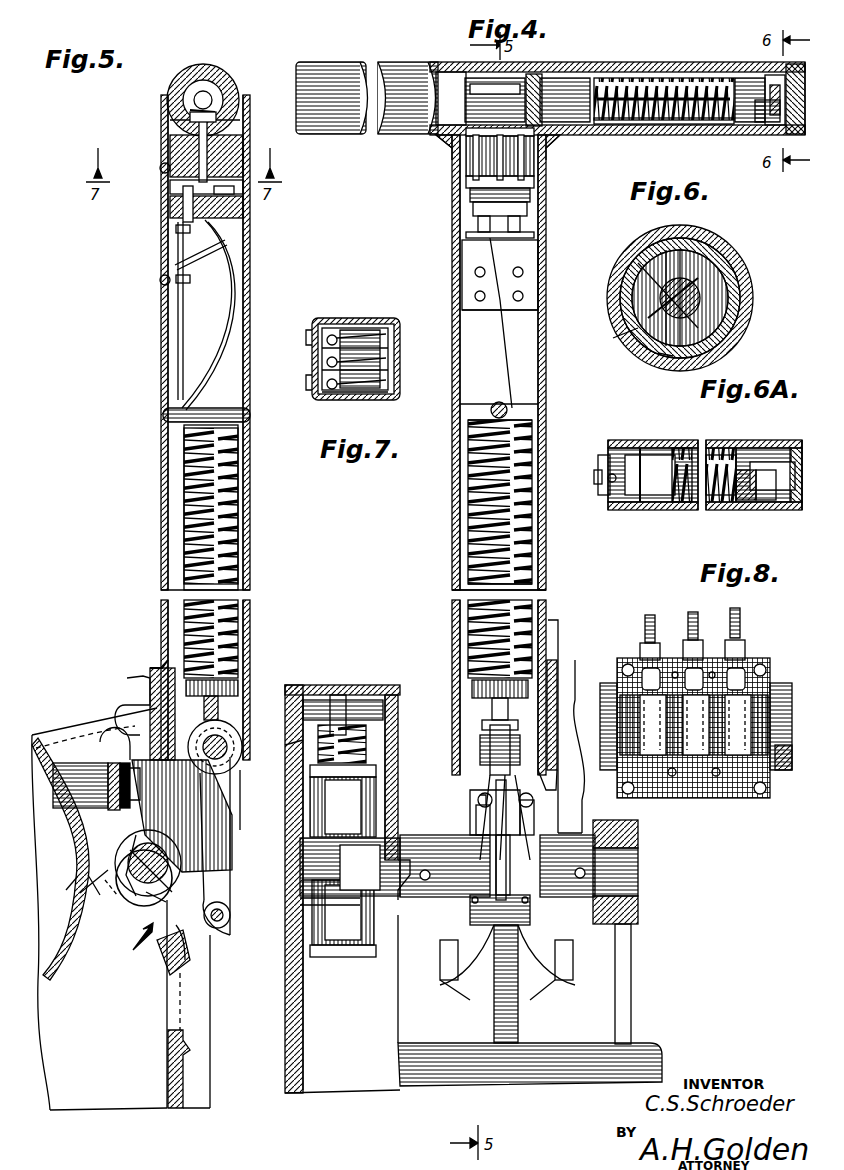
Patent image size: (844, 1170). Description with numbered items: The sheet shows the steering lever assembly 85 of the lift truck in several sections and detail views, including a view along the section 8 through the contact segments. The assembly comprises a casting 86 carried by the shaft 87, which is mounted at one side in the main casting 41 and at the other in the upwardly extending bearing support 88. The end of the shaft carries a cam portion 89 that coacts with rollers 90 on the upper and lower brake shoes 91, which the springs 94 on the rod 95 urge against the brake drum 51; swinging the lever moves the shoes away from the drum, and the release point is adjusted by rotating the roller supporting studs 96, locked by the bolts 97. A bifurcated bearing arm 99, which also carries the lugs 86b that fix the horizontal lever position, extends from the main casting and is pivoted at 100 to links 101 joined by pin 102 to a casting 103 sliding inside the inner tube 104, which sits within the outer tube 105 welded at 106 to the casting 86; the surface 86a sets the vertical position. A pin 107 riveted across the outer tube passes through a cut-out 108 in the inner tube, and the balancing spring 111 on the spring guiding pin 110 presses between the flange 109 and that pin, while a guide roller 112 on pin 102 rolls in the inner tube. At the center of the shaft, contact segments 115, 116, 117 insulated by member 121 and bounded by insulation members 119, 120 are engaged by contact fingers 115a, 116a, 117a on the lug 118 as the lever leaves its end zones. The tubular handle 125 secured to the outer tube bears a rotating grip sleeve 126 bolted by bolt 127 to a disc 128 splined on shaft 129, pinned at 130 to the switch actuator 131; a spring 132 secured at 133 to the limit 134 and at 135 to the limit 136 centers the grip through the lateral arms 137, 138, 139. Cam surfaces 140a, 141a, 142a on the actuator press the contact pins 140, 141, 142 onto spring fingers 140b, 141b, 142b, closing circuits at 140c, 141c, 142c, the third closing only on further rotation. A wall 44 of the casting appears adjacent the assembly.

In FIG. 5, the section line 8 is at (104, 917).
In FIG. 5, the main casting 41 is at (93, 1095).
In FIG. 4, the main casting 41 is at (392, 1092).
In FIG. 4, the wall 44 is at (560, 700).
In FIG. 4, the brake drum 51 is at (300, 900).
In FIG. 5, the steering lever assembly 85 is at (160, 570).
In FIG. 5, the casting 86 is at (150, 680).
In FIG. 4, the casting 86 is at (568, 660).
In FIG. 5, the surface 86a is at (125, 678).
In FIG. 5, the lugs 86b is at (166, 957).
In FIG. 4, the lugs 86b is at (480, 970).
In FIG. 5, the shaft 87 is at (178, 850).
In FIG. 4, the shaft 87 is at (395, 838).
In FIG. 8, the shaft 87 is at (790, 715).
In FIG. 4, the bearing support 88 is at (638, 832).
In FIG. 4, the cam portion 89 is at (300, 876).
In FIG. 4, the rollers 90 is at (290, 840).
In FIG. 4, the brake shoes 91 is at (312, 710).
In FIG. 4, the springs 94 is at (345, 730).
In FIG. 4, the rod 95 is at (338, 700).
In FIG. 4, the roller supporting studs 96 is at (372, 765).
In FIG. 4, the bolts 97 is at (376, 800).
In FIG. 5, the bifurcated bearing arm 99 is at (200, 1015).
In FIG. 4, the bifurcated bearing arm 99 is at (520, 1016).
In FIG. 5, the pivot 100 is at (222, 930).
In FIG. 4, the pivot 100 is at (475, 960).
In FIG. 5, the links 101 is at (236, 880).
In FIG. 4, the links 101 is at (520, 920).
In FIG. 5, the pin 102 is at (222, 760).
In FIG. 4, the pin 102 is at (480, 750).
In FIG. 5, the casting 103 is at (220, 705).
In FIG. 4, the casting 103 is at (495, 710).
In FIG. 5, the inner tube 104 is at (250, 563).
In FIG. 4, the inner tube 104 is at (452, 595).
In FIG. 5, the outer tube 105 is at (246, 544).
In FIG. 4, the outer tube 105 is at (452, 528).
In FIG. 7, the outer tube 105 is at (385, 322).
In FIG. 5, the weld 106 is at (168, 660).
In FIG. 4, the weld 106 is at (562, 632).
In FIG. 5, the pin 107 is at (170, 410).
In FIG. 4, the pin 107 is at (505, 406).
In FIG. 4, the cut-out 108 is at (508, 410).
In FIG. 5, the flange 109 is at (236, 670).
In FIG. 4, the flange 109 is at (476, 680).
In FIG. 5, the spring guiding pin 110 is at (240, 625).
In FIG. 4, the spring guiding pin 110 is at (490, 594).
In FIG. 5, the spring 111 is at (240, 520).
In FIG. 4, the spring 111 is at (470, 480).
In FIG. 5, the guide roller 112 is at (225, 738).
In FIG. 4, the guide roller 112 is at (485, 725).
In FIG. 5, the contact segment 115 is at (158, 905).
In FIG. 8, the contact segment 115 is at (650, 755).
In FIG. 4, the contact finger 115a is at (519, 865).
In FIG. 8, the contact finger 115a is at (645, 655).
In FIG. 8, the contact segment 116 is at (720, 770).
In FIG. 4, the contact finger 116a is at (540, 810).
In FIG. 8, the contact finger 116a is at (688, 655).
In FIG. 5, the contact segment 117 is at (145, 902).
In FIG. 8, the contact segment 117 is at (745, 750).
In FIG. 5, the contact finger 117a is at (100, 876).
In FIG. 4, the contact finger 117a is at (476, 830).
In FIG. 8, the contact finger 117a is at (738, 655).
In FIG. 5, the lug 118 is at (78, 775).
In FIG. 4, the lug 118 is at (470, 800).
In FIG. 5, the insulation member 119 is at (135, 830).
In FIG. 8, the insulation member 119 is at (706, 660).
In FIG. 5, the insulation member 120 is at (152, 905).
In FIG. 4, the insulation member 120 is at (470, 910).
In FIG. 8, the insulation member 120 is at (706, 800).
In FIG. 5, the insulation member 121 is at (128, 892).
In FIG. 8, the insulation member 121 is at (770, 710).
In FIG. 5, the tubular handle 125 is at (215, 70).
In FIG. 4, the tubular handle 125 is at (430, 66).
In FIG. 6A, the tubular handle 125 is at (612, 440).
In FIG. 4, the grip sleeve 126 is at (636, 62).
In FIG. 6, the grip sleeve 126 is at (754, 300).
In FIG. 6A, the grip sleeve 126 is at (688, 442).
In FIG. 4, the bolt 127 is at (765, 135).
In FIG. 6A, the bolt 127 is at (780, 465).
In FIG. 4, the disc 128 is at (806, 128).
In FIG. 6A, the disc 128 is at (790, 505).
In FIG. 5, the shaft 129 is at (201, 90).
In FIG. 4, the shaft 129 is at (660, 80).
In FIG. 6, the shaft 129 is at (700, 285).
In FIG. 6A, the shaft 129 is at (600, 482).
In FIG. 4, the pin 130 is at (540, 70).
In FIG. 6A, the pin 130 is at (594, 475).
In FIG. 5, the switch actuator 131 is at (212, 78).
In FIG. 4, the switch actuator 131 is at (450, 64).
In FIG. 6A, the switch actuator 131 is at (600, 460).
In FIG. 4, the spring 132 is at (685, 80).
In FIG. 6, the spring 132 is at (725, 258).
In FIG. 6A, the spring 132 is at (680, 448).
In FIG. 4, the spring end 133 is at (570, 125).
In FIG. 4, the limit 134 is at (542, 128).
In FIG. 6A, the limit 134 is at (660, 505).
In FIG. 4, the spring end 135 is at (690, 125).
In FIG. 6, the spring end 135 is at (666, 358).
In FIG. 4, the limit 136 is at (750, 72).
In FIG. 6, the limit 136 is at (640, 348).
In FIG. 6A, the limit 136 is at (712, 505).
In FIG. 4, the lateral arm 137 is at (775, 75).
In FIG. 6, the lateral arm 137 is at (658, 288).
In FIG. 6A, the lateral arm 137 is at (766, 505).
In FIG. 4, the lateral arm 138 is at (765, 125).
In FIG. 6, the lateral arm 138 is at (643, 320).
In FIG. 6A, the lateral arm 138 is at (742, 505).
In FIG. 4, the lateral arm 139 is at (588, 66).
In FIG. 4, the contact pin 140 is at (478, 196).
In FIG. 7, the contact pin 140 is at (365, 322).
In FIG. 5, the cam surface 140a is at (175, 138).
In FIG. 4, the cam surface 140a is at (474, 160).
In FIG. 4, the spring finger 140b is at (530, 180).
In FIG. 7, the spring finger 140b is at (334, 336).
In FIG. 7, the switch 140c is at (331, 330).
In FIG. 4, the contact pin 141 is at (472, 186).
In FIG. 7, the contact pin 141 is at (390, 350).
In FIG. 5, the cam surface 141a is at (187, 120).
In FIG. 4, the cam surface 141a is at (466, 150).
In FIG. 4, the spring finger 141b is at (532, 200).
In FIG. 7, the spring finger 141b is at (328, 340).
In FIG. 7, the circuit closing point 141c is at (328, 360).
In FIG. 5, the contact pin 142 is at (248, 150).
In FIG. 4, the contact pin 142 is at (470, 175).
In FIG. 7, the contact pin 142 is at (390, 372).
In FIG. 5, the cam surface 142a is at (226, 98).
In FIG. 4, the cam surface 142a is at (432, 136).
In FIG. 5, the spring finger 142b is at (240, 195).
In FIG. 4, the spring finger 142b is at (484, 205).
In FIG. 7, the spring finger 142b is at (328, 382).
In FIG. 5, the circuit closing point 142c is at (170, 190).
In FIG. 7, the circuit closing point 142c is at (328, 388).